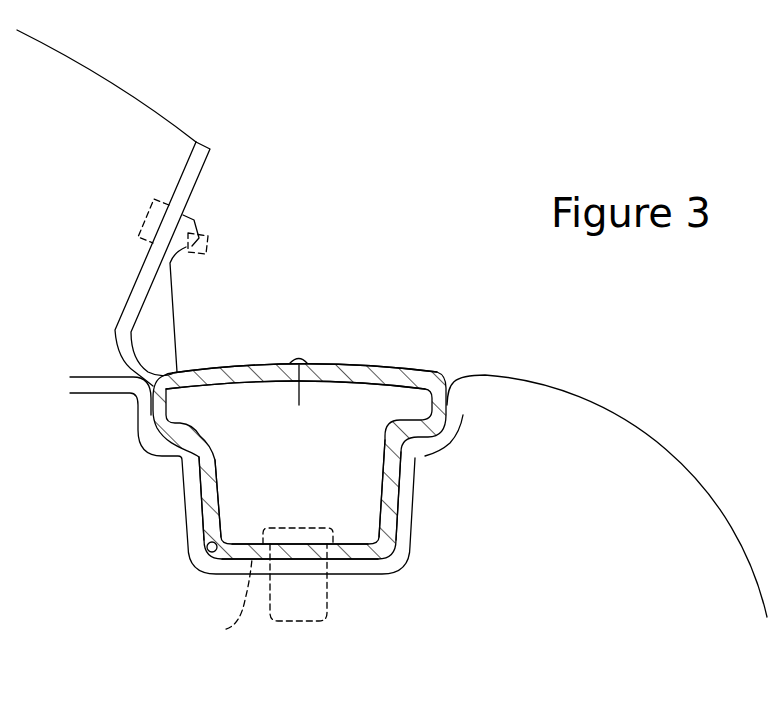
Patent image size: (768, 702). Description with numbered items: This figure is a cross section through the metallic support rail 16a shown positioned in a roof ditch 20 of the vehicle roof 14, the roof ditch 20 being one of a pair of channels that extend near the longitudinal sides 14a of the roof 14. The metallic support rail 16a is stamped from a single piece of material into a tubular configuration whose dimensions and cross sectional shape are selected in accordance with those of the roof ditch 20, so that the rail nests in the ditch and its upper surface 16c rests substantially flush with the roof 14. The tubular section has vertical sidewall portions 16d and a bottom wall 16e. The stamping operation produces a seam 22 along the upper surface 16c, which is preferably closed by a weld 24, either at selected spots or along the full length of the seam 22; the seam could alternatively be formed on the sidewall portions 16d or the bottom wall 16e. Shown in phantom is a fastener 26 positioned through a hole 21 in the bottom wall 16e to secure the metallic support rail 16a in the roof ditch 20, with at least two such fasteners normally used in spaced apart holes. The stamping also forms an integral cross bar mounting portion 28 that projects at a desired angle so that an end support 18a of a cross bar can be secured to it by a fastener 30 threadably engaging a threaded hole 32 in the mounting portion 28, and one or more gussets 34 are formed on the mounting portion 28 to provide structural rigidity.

The roof 14 is at (66, 362).
The longitudinal side of the roof 14a is at (627, 432).
The metallic support rail 16a is at (412, 358).
The upper surface 16c is at (328, 373).
The vertical sidewall portions 16d is at (207, 487).
The bottom wall 16e is at (347, 552).
The end support 18a is at (105, 92).
The roof ditch 20 is at (222, 563).
The hole 21 is at (224, 601).
The seam 22 is at (299, 405).
The weld 24 is at (300, 360).
The fastener 26 is at (330, 607).
The cross bar mounting portion 28 is at (189, 190).
The fastener 30 is at (145, 220).
The threaded hole 32 is at (189, 256).
The gusset 34 is at (158, 313).